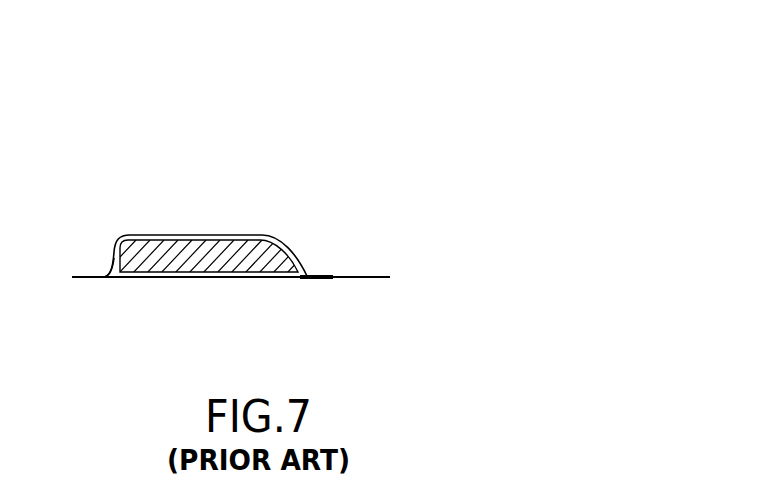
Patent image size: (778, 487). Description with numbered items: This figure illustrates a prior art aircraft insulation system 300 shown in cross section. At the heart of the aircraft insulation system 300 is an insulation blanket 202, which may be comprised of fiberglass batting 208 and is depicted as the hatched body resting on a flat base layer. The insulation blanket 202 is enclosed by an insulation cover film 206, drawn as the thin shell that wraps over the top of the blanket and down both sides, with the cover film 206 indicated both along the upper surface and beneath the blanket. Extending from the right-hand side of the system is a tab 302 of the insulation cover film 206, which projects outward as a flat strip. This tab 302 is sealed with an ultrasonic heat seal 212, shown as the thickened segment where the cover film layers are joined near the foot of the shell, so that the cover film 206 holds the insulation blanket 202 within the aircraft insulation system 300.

The aircraft insulation system 300 is at (371, 72).
The tab 302 is at (362, 278).
The ultrasonic heat seal 212 is at (320, 280).
The insulation cover film 206 is at (255, 234).
The insulation blanket 202 is at (140, 251).
The fiberglass batting 208 is at (110, 278).